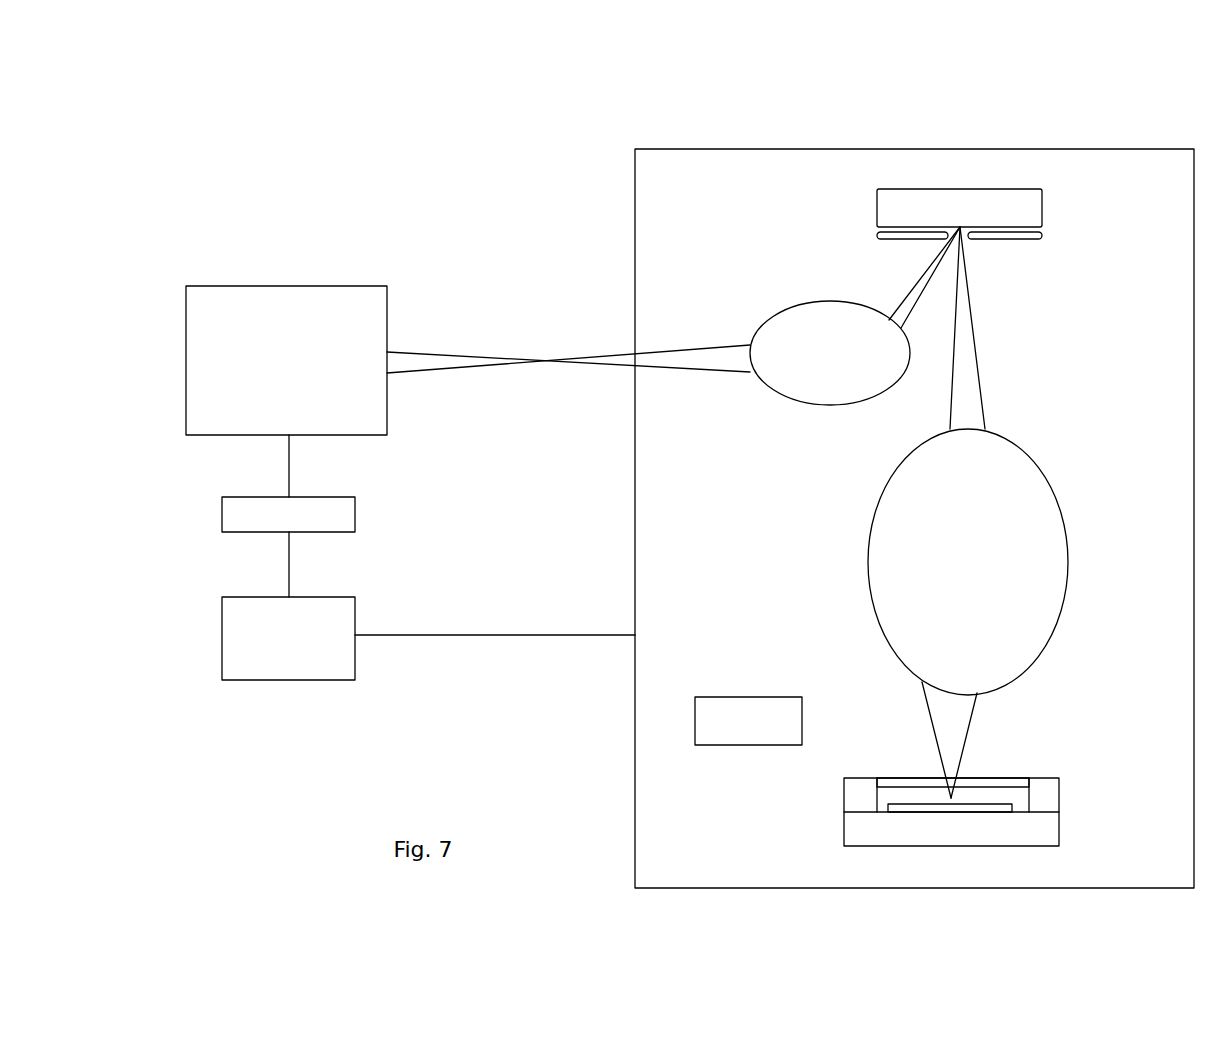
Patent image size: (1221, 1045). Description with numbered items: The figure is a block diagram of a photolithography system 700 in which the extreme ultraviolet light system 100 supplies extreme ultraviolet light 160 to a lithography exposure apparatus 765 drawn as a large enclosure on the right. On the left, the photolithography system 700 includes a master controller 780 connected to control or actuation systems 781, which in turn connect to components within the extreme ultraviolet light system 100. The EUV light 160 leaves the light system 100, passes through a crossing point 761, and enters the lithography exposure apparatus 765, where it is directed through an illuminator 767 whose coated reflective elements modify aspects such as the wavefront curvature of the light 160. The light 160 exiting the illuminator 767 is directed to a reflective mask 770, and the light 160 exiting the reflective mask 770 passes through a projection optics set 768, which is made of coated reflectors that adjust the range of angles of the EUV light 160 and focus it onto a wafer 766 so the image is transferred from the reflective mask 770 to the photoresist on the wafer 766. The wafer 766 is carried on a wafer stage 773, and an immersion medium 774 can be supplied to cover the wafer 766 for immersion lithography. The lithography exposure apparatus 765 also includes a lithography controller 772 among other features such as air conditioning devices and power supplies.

The photolithography system 700 is at (527, 66).
The extreme ultraviolet light system 100 is at (286, 360).
The extreme ultraviolet light 160 is at (428, 355).
The focal point 761 is at (540, 360).
The lithography exposure apparatus 765 is at (802, 149).
The wafer 766 is at (1008, 808).
The illuminator 767 is at (830, 353).
The projection optics set 768 is at (968, 562).
The reflective mask 770 is at (959, 214).
The lithography controller 772 is at (748, 721).
The wafer stage 773 is at (1060, 830).
The immersion medium 774 is at (992, 783).
The master controller 780 is at (428, 606).
The control or actuation systems 781 is at (288, 483).